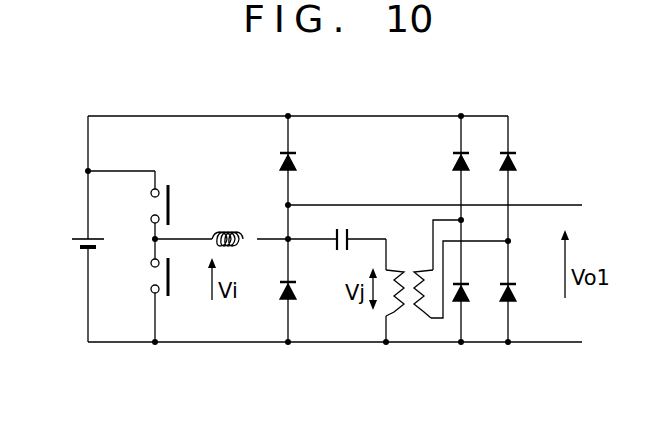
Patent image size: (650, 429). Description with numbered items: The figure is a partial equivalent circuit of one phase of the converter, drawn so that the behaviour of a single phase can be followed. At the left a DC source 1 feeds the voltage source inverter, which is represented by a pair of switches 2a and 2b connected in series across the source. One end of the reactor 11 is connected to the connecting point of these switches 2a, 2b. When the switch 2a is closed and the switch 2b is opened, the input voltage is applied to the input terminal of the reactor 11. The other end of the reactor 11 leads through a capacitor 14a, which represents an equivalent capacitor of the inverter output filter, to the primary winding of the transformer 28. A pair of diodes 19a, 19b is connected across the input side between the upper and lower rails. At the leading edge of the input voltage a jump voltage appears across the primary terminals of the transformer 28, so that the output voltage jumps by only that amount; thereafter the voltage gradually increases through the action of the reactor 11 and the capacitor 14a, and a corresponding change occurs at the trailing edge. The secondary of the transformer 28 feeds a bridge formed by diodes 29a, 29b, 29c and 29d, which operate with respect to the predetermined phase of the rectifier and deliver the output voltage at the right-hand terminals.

The DC power source (battery) 1 is at (67, 239).
The switch 2a is at (175, 208).
The switch 2b is at (175, 281).
The reactor 11 is at (237, 235).
The capacitor 14a is at (358, 216).
The diode 19a is at (298, 166).
The diode 19b is at (297, 284).
The transformer 28 is at (412, 318).
The diode 29a is at (454, 159).
The diode 29b is at (515, 304).
The diode 29c is at (515, 161).
The diode 29d is at (466, 304).